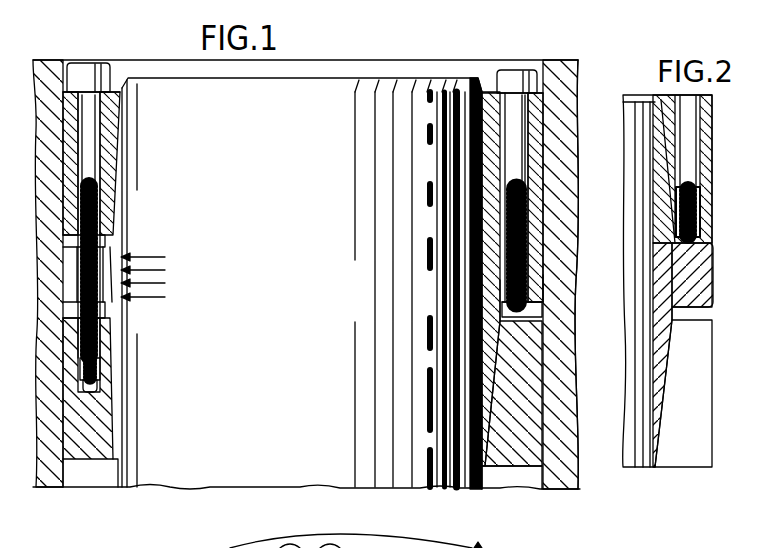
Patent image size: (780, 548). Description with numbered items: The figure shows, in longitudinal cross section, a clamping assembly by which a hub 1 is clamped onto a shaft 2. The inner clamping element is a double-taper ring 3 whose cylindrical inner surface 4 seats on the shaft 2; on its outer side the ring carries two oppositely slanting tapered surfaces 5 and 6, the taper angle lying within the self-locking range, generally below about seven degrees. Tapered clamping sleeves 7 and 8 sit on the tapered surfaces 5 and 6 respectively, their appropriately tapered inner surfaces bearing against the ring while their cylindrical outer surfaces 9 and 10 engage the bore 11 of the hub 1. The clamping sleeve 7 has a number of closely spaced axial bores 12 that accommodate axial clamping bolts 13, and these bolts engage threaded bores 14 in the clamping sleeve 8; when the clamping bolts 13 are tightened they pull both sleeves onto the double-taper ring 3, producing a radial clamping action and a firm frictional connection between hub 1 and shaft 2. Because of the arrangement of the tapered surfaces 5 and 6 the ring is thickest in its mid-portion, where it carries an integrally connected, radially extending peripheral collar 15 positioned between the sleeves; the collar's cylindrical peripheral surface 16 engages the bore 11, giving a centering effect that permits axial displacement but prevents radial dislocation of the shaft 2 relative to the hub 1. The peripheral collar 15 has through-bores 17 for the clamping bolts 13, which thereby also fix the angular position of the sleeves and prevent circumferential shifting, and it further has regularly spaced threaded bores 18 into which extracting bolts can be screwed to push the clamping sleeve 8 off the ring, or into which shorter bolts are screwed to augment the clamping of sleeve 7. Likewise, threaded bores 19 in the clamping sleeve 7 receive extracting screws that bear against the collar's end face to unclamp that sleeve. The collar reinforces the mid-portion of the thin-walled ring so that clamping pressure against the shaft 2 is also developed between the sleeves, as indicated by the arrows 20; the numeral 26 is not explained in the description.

In FIG. 1, the hub 1 is at (48, 470).
In FIG. 1, the shaft 2 is at (328, 96).
In FIG. 1, the double-taper ring 3 is at (476, 318).
In FIG. 2, the double-taper ring 3 is at (657, 383).
In FIG. 1, the cylindrical inner surface 4 is at (470, 242).
In FIG. 1, the tapered surface 5 is at (469, 174).
In FIG. 1, the tapered surface 6 is at (432, 488).
In FIG. 1, the tapered clamping sleeve 7 is at (118, 113).
In FIG. 2, the tapered clamping sleeve 7 is at (700, 131).
In FIG. 1, the tapered clamping sleeve 8 is at (92, 448).
In FIG. 1, the outer surface 9 is at (572, 165).
In FIG. 1, the outer surface 10 is at (540, 418).
In FIG. 1, the bore 11 is at (532, 70).
In FIG. 1, the axial bore 12 is at (110, 155).
In FIG. 1, the clamping bolt 13 is at (100, 72).
In FIG. 1, the threaded bore 14 is at (98, 347).
In FIG. 1, the peripheral collar 15 is at (541, 282).
In FIG. 2, the peripheral collar 15 is at (703, 286).
In FIG. 1, the cylindrical peripheral surface 16 is at (544, 288).
In FIG. 1, the through-bore 17 is at (105, 258).
In FIG. 1, the threaded bore 18 is at (528, 303).
In FIG. 1, the threaded bore 19 is at (386, 547).
In FIG. 2, the threaded bore 19 is at (692, 213).
In FIG. 1, the arrows 20 is at (164, 268).
In FIG. 1, the bolt shank 26 is at (538, 189).